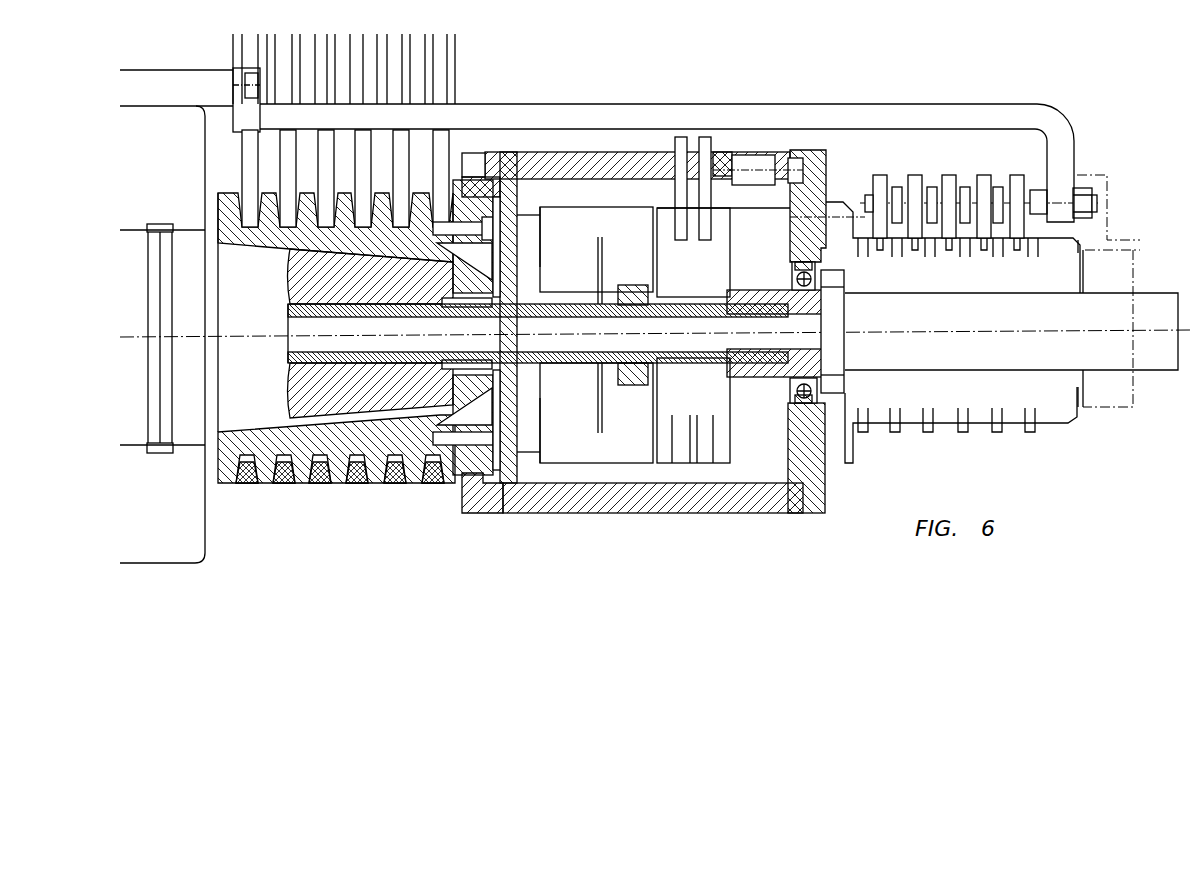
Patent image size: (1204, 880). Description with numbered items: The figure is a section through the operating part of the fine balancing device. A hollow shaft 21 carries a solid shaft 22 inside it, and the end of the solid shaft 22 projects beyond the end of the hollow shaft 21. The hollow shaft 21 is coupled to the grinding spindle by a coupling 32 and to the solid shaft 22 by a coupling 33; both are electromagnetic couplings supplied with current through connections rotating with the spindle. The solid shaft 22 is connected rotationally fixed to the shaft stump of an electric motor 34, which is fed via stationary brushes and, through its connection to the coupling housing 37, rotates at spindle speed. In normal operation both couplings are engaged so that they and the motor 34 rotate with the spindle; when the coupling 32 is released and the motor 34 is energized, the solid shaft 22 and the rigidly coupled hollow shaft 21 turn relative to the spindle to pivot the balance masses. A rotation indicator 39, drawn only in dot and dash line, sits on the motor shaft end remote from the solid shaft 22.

The hollow shaft 21 is at (550, 312).
The solid shaft 22 is at (566, 340).
The coupling 32 is at (634, 260).
The coupling 33 is at (759, 443).
The electric motor 34 is at (947, 288).
The coupling housing 37 is at (597, 165).
The rotation indicator 39 is at (1112, 266).